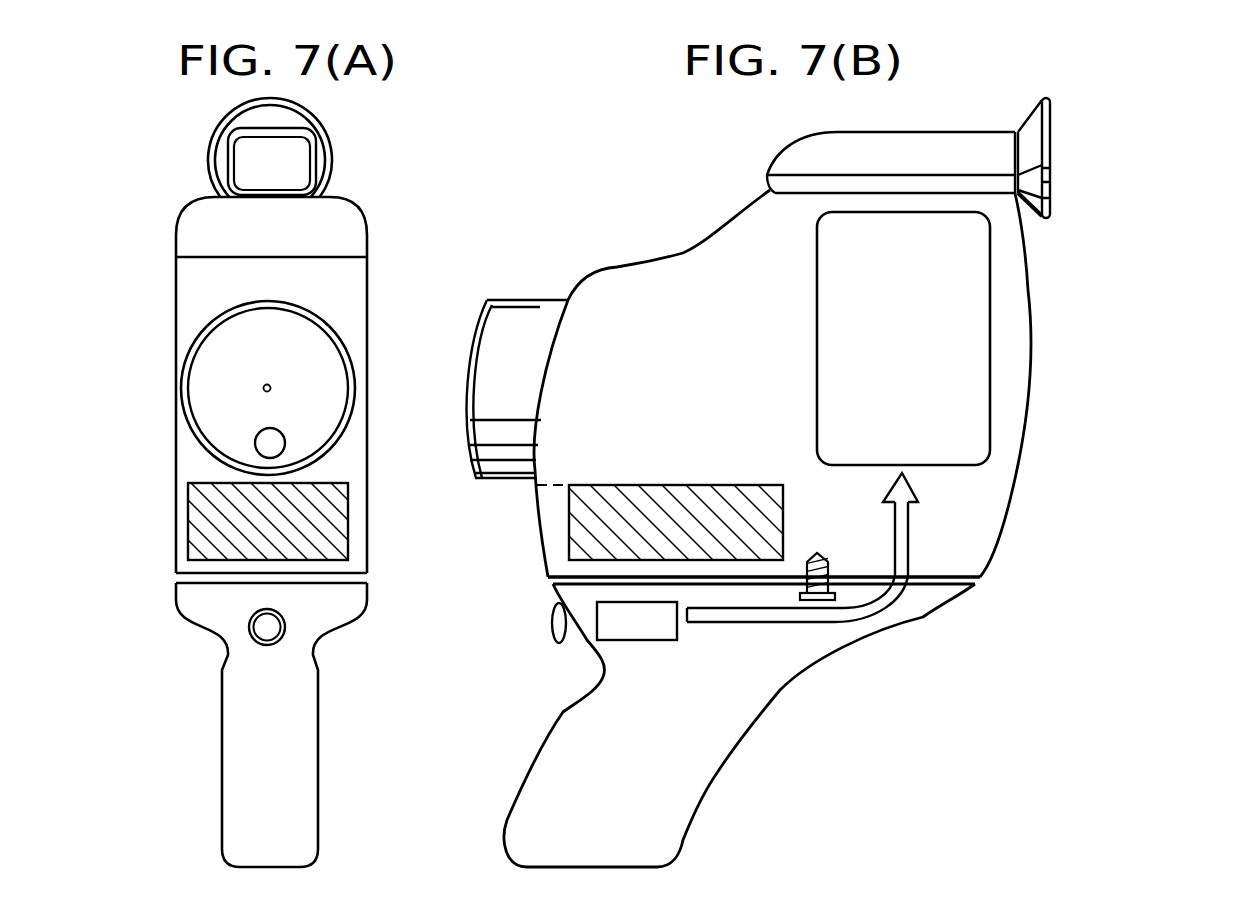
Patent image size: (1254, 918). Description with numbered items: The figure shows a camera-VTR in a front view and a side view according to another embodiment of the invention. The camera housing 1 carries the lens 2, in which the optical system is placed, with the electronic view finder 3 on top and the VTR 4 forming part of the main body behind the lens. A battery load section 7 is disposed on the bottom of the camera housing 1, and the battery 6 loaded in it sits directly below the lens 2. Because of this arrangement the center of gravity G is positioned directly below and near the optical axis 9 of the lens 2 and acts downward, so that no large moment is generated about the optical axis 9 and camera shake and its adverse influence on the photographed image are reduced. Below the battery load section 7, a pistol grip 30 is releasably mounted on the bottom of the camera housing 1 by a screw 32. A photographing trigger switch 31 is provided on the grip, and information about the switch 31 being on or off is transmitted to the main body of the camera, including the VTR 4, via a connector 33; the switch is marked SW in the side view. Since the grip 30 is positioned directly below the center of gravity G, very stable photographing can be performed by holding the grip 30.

In FIG. 7A, the camera housing 1 is at (190, 282).
In FIG. 7B, the camera housing 1 is at (667, 272).
In FIG. 7A, the lens 2 is at (190, 372).
In FIG. 7B, the lens 2 is at (487, 300).
In FIG. 7A, the electronic view finder 3 is at (243, 127).
In FIG. 7B, the electronic view finder 3 is at (932, 143).
In FIG. 7B, the VTR 4 is at (980, 307).
In FIG. 7A, the battery 6 is at (197, 535).
In FIG. 7B, the battery 6 is at (573, 508).
In FIG. 7A, the battery load section 7 is at (183, 492).
In FIG. 7B, the battery load section 7 is at (550, 547).
In FIG. 7A, the optical axis 9 is at (264, 384).
In FIG. 7A, the center of gravity G is at (280, 432).
In FIG. 7A, the pistol grip 30 is at (232, 716).
In FIG. 7B, the pistol grip 30 is at (770, 680).
In FIG. 7A, the photographing trigger switch 31 is at (277, 630).
In FIG. 7B, the photographing trigger switch 31 is at (560, 645).
In FIG. 7B, the screw 32 is at (835, 542).
In FIG. 7B, the connector 33 is at (908, 580).
In FIG. 7B, the switch SW is at (637, 621).